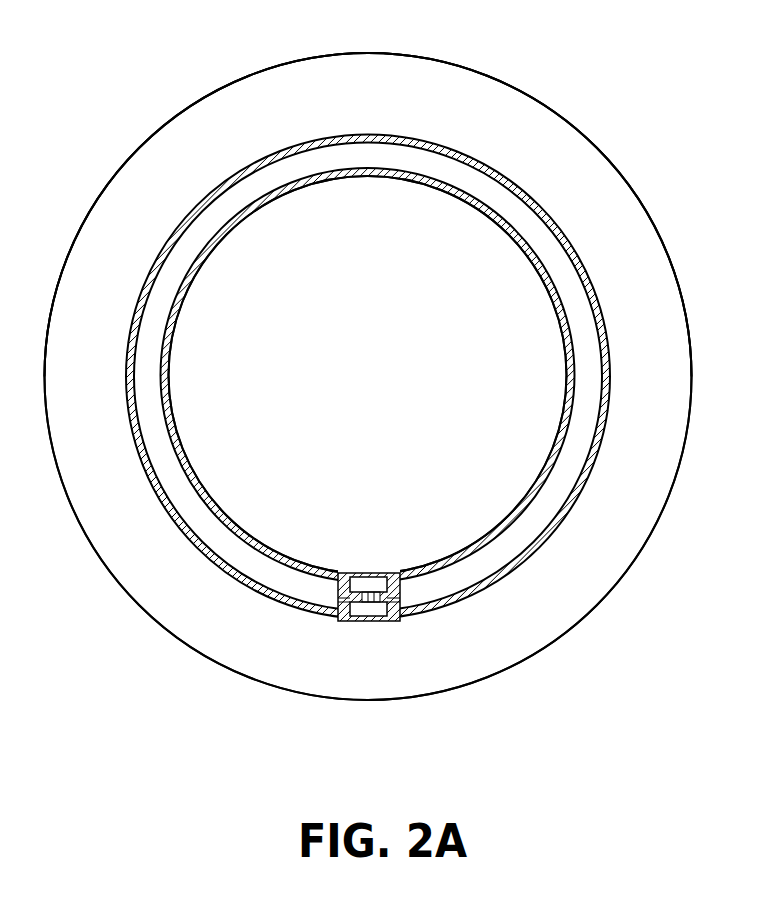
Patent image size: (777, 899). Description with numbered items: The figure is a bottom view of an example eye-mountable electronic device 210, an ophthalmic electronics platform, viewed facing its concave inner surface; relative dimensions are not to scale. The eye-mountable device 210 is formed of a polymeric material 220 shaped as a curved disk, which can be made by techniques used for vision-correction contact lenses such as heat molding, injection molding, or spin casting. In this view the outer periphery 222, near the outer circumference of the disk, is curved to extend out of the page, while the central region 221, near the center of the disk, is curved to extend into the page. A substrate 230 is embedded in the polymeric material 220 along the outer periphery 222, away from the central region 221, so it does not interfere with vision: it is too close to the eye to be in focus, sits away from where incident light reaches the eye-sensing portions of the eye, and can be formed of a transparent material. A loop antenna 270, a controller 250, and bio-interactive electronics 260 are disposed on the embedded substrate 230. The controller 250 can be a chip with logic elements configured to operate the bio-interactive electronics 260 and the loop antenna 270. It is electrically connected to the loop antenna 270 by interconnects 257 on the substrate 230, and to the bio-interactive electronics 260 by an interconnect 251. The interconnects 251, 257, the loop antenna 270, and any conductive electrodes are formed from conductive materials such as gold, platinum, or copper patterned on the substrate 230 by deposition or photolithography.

The eye-mountable electronic device 210 is at (127, 77).
The polymeric material 220 is at (90, 547).
The central region 221 is at (325, 335).
The outer periphery 222 is at (306, 88).
The substrate 230 is at (558, 528).
The loop antenna 270 is at (493, 563).
The controller 250 is at (362, 610).
The interconnect 251 is at (392, 590).
The interconnects 257 is at (398, 613).
The bio-interactive electronics 260 is at (365, 582).